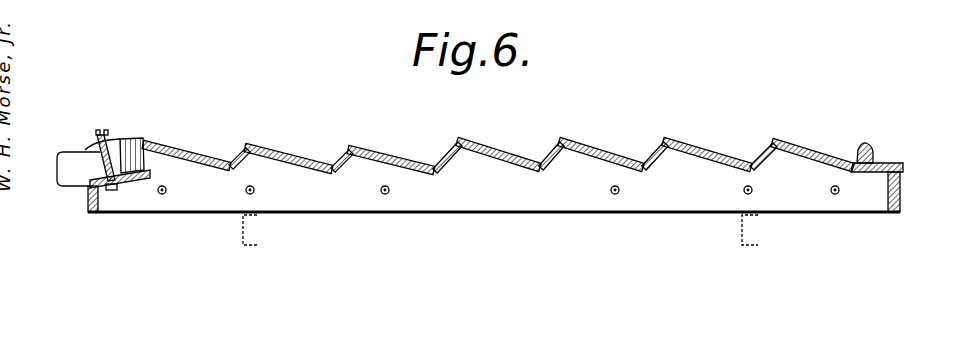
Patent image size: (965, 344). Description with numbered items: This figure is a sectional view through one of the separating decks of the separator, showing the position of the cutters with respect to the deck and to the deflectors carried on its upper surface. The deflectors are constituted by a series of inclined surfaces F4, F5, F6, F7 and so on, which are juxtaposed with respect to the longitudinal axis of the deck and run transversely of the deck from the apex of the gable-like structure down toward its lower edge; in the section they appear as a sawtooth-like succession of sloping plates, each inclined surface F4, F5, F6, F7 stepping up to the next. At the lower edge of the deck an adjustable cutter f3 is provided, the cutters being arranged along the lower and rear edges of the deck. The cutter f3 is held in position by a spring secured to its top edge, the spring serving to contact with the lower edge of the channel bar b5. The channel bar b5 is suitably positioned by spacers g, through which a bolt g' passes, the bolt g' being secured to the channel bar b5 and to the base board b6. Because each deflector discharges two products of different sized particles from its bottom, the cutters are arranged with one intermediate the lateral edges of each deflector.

The channel bar b5 is at (104, 132).
The spacers g is at (87, 152).
The adjustable cutter f3 is at (66, 176).
The base board b6 is at (88, 184).
The bolt g' is at (123, 214).
The inclined surface F7 is at (178, 150).
The inclined surface F6 is at (280, 151).
The inclined surface F5 is at (385, 152).
The inclined surface F4 is at (495, 148).